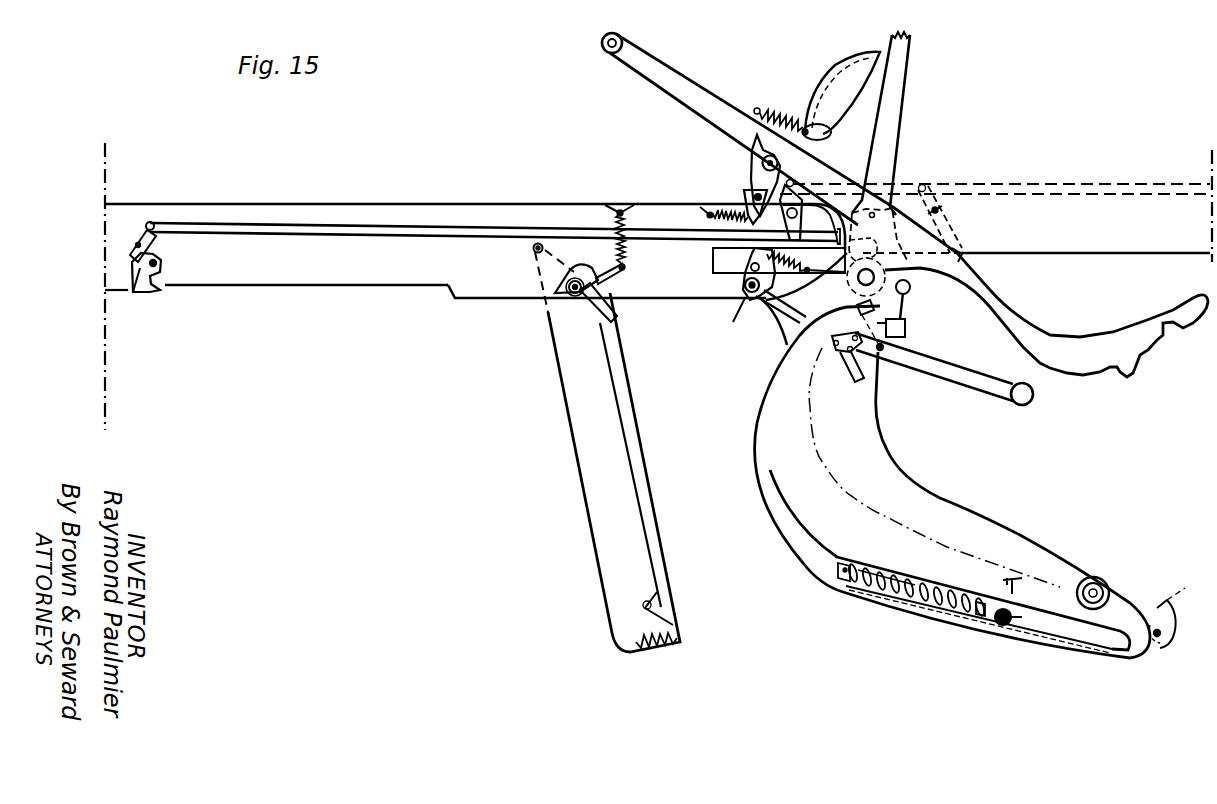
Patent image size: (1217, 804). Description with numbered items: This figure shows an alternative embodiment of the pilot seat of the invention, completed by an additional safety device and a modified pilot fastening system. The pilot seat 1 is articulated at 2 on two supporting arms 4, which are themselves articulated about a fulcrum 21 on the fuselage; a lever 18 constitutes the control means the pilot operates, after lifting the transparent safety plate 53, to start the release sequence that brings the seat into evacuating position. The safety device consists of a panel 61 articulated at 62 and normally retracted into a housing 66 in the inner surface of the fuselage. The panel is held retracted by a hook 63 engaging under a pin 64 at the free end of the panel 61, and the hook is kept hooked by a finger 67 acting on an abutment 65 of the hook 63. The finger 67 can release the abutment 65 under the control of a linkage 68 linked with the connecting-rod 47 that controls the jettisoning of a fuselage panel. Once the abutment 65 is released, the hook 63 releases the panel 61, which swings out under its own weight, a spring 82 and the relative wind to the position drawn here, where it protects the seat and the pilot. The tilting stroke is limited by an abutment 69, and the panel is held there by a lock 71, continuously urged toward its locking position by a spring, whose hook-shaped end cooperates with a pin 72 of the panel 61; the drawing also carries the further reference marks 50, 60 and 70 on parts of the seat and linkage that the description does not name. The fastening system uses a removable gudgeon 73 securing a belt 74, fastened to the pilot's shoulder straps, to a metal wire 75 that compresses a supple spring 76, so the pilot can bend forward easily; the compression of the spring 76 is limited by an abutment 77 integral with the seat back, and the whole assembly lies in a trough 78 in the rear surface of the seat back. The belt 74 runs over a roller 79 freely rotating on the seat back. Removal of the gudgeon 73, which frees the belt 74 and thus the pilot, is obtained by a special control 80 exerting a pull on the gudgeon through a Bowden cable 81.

The pilot seat 1 is at (853, 462).
The seat articulation 2 is at (877, 274).
The supporting arms 4 is at (700, 92).
The lever 18 is at (938, 366).
The fulcrum 21 is at (610, 54).
The connecting-rod 47 is at (1015, 194).
The pivot boss 50 is at (1108, 592).
The transparent safety plate 53 is at (826, 84).
The release lever 60 is at (751, 295).
The panel 61 is at (618, 478).
The panel articulation 62 is at (540, 245).
The hook 63 is at (156, 286).
The pin 64 is at (645, 607).
The abutment 65 is at (139, 272).
The housing 66 is at (297, 248).
The finger 67 is at (149, 222).
The linkage 68 is at (410, 228).
The abutment 69 is at (612, 302).
The cam 70 is at (583, 270).
The lock 71 is at (623, 262).
The pin 72 is at (572, 294).
The removable gudgeon 73 is at (1002, 624).
The belt 74 is at (1167, 612).
The metal wire 75 is at (913, 602).
The supple spring 76 is at (872, 594).
The abutment 77 is at (979, 612).
The trough 78 is at (847, 586).
The roller 79 is at (1162, 640).
The special control 80 is at (907, 329).
The Bowden cable 81 is at (905, 522).
The spring 82 is at (642, 648).